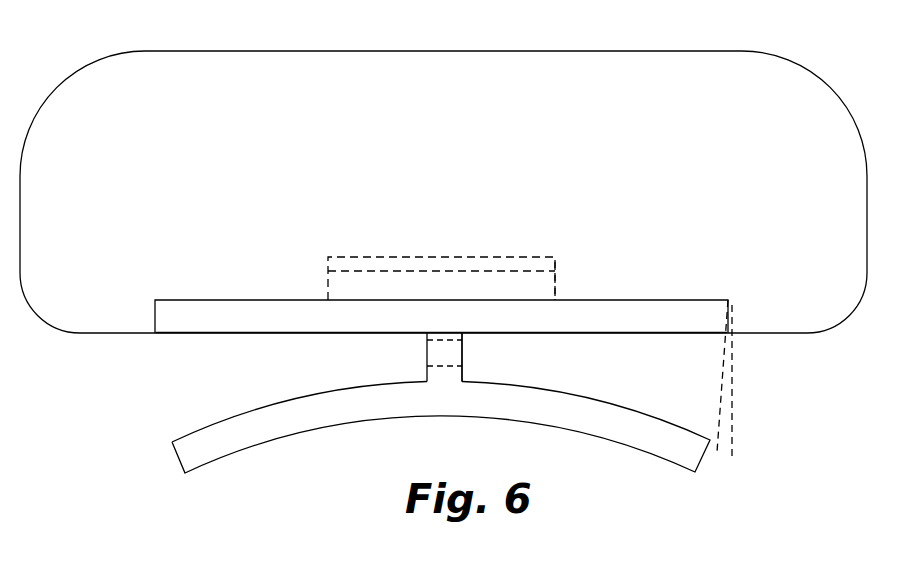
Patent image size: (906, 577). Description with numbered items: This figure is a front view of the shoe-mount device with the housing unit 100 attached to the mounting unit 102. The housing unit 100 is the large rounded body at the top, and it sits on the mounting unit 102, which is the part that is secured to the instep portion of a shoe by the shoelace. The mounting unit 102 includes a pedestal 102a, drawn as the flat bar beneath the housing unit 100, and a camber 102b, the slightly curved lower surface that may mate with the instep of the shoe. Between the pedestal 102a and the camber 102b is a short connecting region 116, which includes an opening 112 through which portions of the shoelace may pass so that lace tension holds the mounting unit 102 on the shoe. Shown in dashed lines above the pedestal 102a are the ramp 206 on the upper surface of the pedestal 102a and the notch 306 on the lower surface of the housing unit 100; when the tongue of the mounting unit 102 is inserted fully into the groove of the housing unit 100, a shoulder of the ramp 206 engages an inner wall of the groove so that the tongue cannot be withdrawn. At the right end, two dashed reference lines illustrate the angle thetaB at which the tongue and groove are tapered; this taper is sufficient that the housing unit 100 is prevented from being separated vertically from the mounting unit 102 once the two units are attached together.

The housing unit 100 is at (705, 47).
The mounting unit 102 is at (240, 337).
The pedestal 102a is at (590, 322).
The camber 102b is at (190, 450).
The opening 112 is at (422, 355).
The connecting region 116 is at (480, 320).
The ramp 206 is at (548, 290).
The notch 306 is at (390, 268).
The angle θb thetaB is at (695, 375).